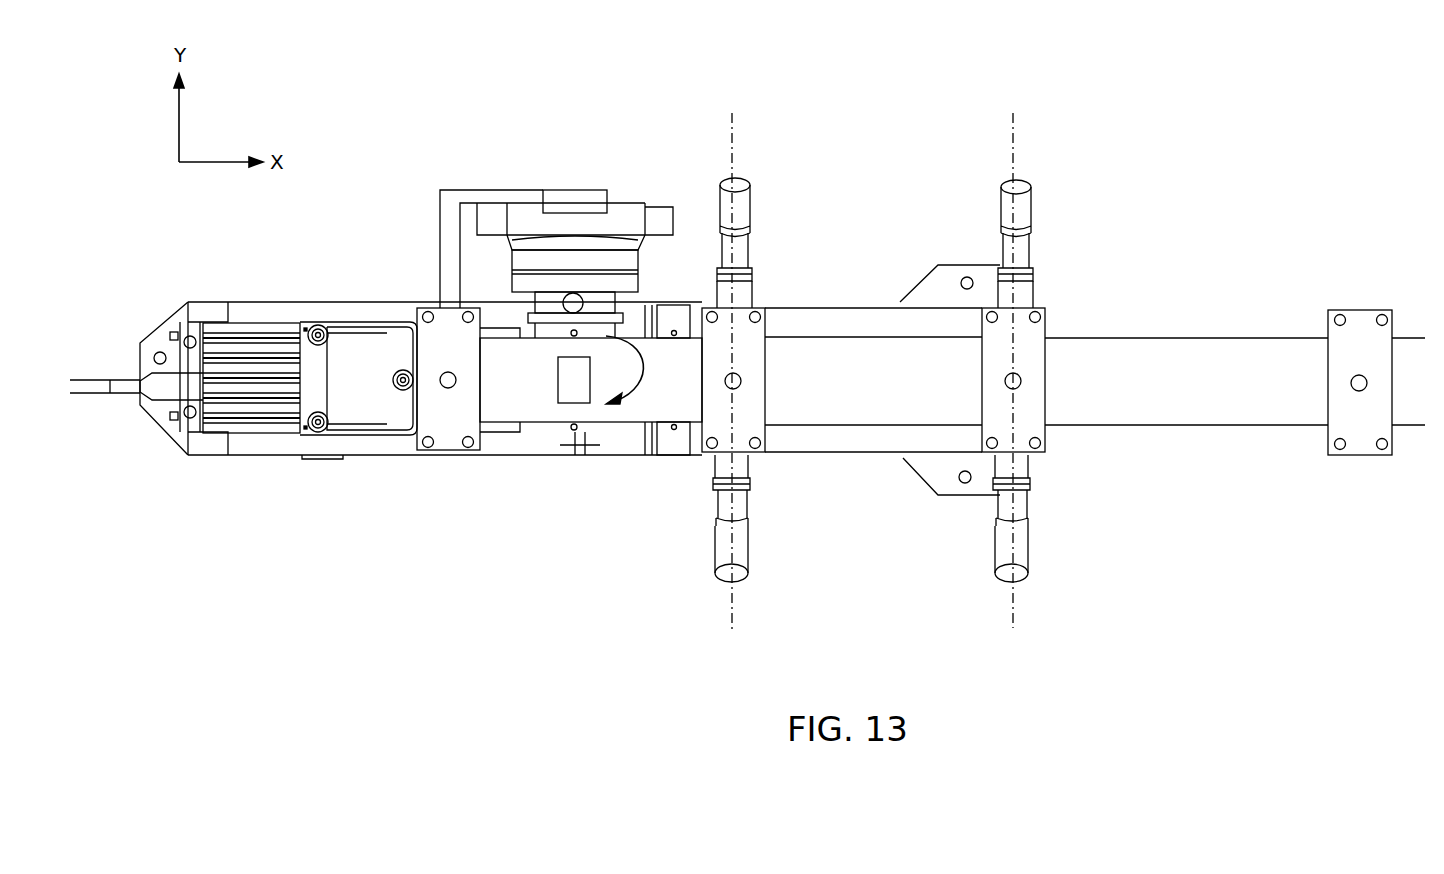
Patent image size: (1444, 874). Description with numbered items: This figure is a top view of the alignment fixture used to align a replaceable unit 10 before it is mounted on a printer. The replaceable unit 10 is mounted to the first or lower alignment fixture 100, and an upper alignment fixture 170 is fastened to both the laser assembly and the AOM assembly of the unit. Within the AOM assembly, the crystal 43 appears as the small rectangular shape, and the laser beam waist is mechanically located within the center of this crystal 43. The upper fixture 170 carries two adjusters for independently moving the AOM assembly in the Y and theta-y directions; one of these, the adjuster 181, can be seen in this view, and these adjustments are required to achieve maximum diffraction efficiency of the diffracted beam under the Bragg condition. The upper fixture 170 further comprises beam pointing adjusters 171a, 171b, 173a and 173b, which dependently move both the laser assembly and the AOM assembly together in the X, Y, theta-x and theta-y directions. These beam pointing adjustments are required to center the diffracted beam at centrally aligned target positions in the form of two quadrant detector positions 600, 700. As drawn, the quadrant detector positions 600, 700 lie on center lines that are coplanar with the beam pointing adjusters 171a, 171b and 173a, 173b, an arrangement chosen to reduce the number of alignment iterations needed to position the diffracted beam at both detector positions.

The replaceable unit 10 is at (265, 435).
The crystal 43 is at (557, 377).
The lower alignment fixture 100 is at (878, 462).
The upper alignment fixture 170 is at (1172, 338).
The beam pointing adjuster 171a is at (753, 203).
The beam pointing adjuster 171b is at (748, 552).
The beam pointing adjuster 173a is at (1032, 207).
The beam pointing adjuster 173b is at (1028, 555).
The adjuster 181 is at (658, 207).
The quadrant detector position 600 is at (723, 610).
The quadrant detector position 700 is at (1007, 620).